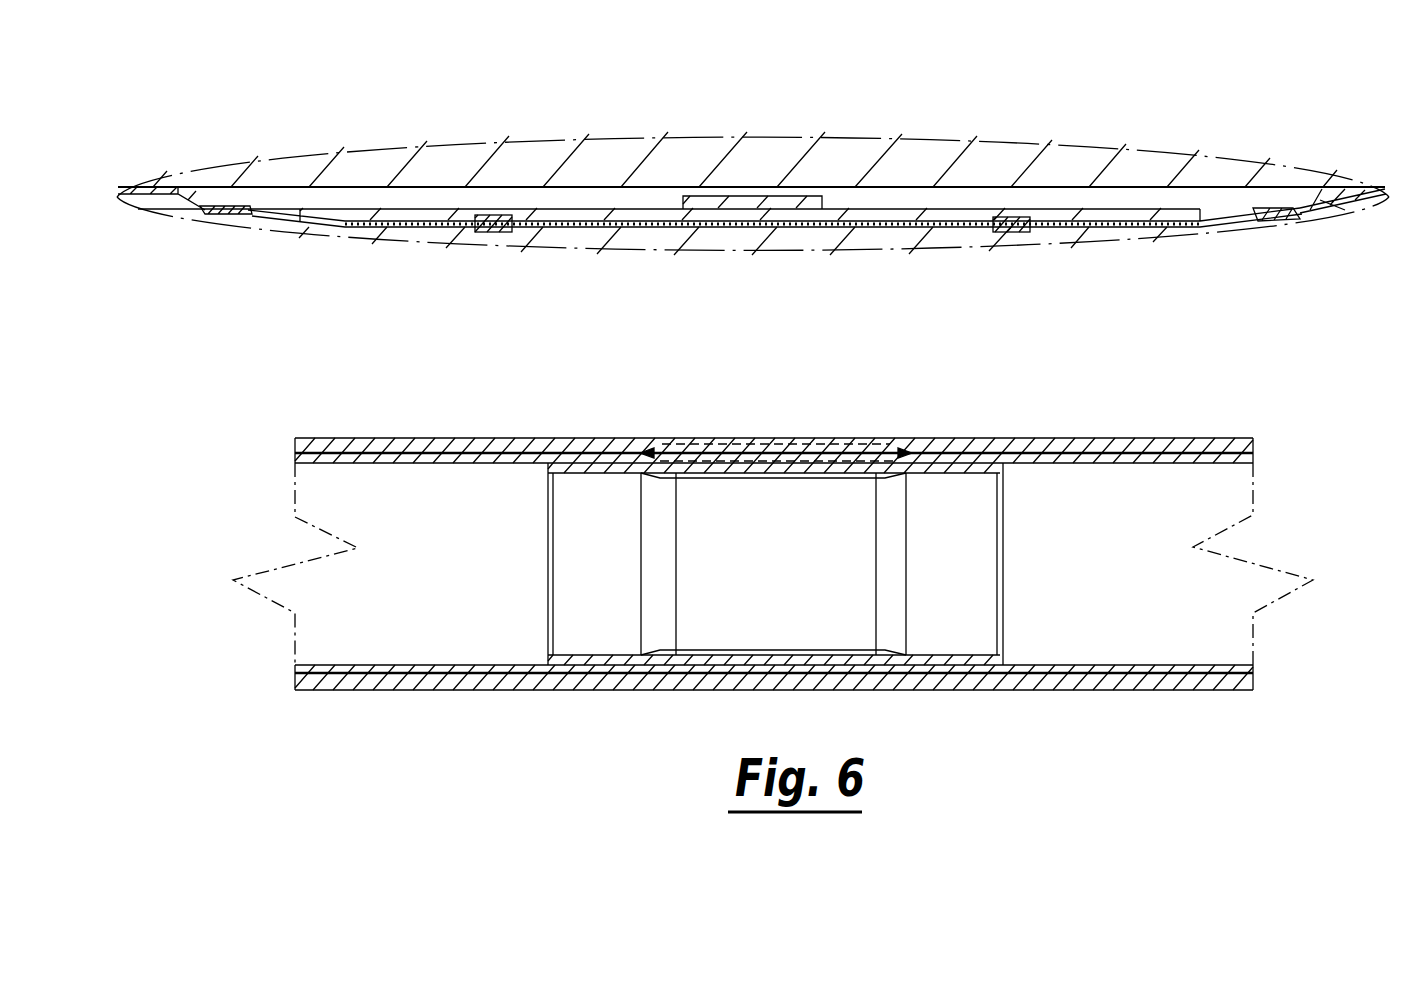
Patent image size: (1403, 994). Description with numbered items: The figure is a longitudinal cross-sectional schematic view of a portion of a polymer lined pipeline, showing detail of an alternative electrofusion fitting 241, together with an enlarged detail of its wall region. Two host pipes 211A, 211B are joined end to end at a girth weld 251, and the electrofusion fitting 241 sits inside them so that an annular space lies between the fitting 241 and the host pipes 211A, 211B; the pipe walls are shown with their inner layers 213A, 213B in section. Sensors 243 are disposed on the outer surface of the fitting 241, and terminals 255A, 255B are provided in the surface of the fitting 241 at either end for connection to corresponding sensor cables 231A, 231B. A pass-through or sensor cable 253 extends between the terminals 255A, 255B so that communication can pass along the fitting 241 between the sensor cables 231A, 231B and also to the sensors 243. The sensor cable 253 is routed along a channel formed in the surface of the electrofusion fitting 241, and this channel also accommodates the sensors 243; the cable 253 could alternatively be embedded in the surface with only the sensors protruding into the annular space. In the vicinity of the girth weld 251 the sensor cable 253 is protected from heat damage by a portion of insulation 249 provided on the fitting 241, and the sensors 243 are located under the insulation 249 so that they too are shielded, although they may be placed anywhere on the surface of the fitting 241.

The host pipe 211A is at (465, 455).
The host pipe 211B is at (1226, 455).
The first tube liner 213A is at (386, 455).
The second tube liner 213B is at (1162, 455).
The sensor cable 231A is at (180, 192).
The sensor cable 231B is at (1320, 200).
The electrofusion fitting 241 is at (953, 483).
The sensors 243 is at (492, 233).
The insulation 249 is at (728, 205).
The girth weld 251 is at (775, 440).
The sensor cable 253 is at (1157, 228).
The terminal 255A is at (218, 210).
The terminal 255B is at (1292, 217).